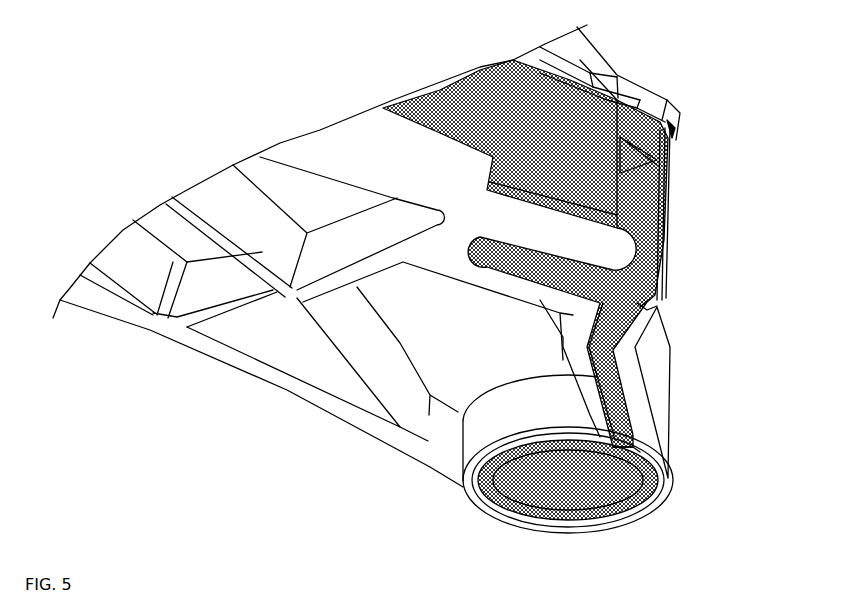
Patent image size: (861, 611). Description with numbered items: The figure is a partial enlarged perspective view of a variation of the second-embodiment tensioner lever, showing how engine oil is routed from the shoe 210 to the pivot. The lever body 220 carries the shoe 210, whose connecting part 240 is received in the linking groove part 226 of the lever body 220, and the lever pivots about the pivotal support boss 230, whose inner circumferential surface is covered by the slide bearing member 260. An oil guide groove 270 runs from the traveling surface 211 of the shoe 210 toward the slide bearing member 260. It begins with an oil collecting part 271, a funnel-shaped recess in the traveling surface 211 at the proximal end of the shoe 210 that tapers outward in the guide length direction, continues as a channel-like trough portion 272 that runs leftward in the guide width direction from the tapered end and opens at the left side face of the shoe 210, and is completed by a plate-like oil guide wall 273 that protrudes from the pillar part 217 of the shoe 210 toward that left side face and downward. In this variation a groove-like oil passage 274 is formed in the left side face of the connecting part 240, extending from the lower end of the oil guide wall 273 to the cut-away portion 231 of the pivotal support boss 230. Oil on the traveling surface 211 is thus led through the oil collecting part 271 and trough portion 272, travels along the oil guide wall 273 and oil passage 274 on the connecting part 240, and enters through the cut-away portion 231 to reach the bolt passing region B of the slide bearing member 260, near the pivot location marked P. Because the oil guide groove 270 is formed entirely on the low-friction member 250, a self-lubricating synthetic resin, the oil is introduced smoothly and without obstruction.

The shoe 210 is at (638, 112).
The traveling surface 211 is at (487, 127).
The pillar part 217 is at (668, 195).
The lever body 220 is at (181, 347).
The linking groove part 226 is at (632, 416).
The pivotal support boss 230 is at (510, 520).
The cut-away portion 231 is at (636, 443).
The connecting part 240 is at (626, 374).
The low-friction member 250 is at (678, 115).
The slide bearing member 260 is at (650, 513).
The oil guide groove 270 is at (670, 213).
The oil collecting part 271 is at (660, 150).
The trough portion 272 is at (672, 224).
The oil guide wall 273 is at (657, 286).
The oil passage 274 is at (623, 328).
The cylindrical post P is at (473, 497).
The bolt passing region B is at (600, 515).